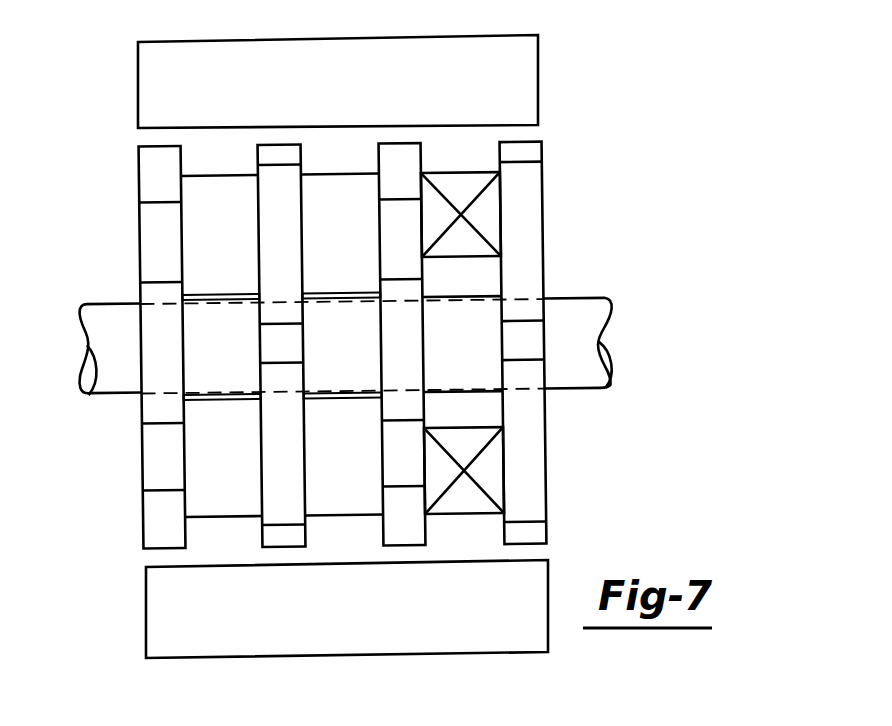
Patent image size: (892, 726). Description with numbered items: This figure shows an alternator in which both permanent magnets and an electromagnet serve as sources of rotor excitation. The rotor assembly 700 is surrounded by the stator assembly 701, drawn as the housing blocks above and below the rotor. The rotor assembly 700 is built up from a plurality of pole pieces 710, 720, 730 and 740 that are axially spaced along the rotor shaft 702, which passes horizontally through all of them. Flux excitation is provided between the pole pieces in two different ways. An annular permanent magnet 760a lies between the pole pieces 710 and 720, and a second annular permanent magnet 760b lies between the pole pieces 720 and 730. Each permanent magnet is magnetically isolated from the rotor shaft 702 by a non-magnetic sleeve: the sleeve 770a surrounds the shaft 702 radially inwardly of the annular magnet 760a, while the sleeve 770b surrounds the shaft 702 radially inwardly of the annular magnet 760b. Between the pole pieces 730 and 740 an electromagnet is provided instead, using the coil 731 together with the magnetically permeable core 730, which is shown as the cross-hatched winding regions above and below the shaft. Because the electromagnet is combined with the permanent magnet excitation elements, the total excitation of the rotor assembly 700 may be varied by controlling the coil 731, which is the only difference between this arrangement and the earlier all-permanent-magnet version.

The rotor assembly 700 is at (580, 166).
The stator assembly 701 is at (278, 40).
The rotor shaft 702 is at (570, 298).
The pole piece 710 is at (145, 512).
The pole piece 720 is at (265, 534).
The pole piece / magnetically permeable core 730 is at (385, 532).
The coil 731 is at (437, 172).
The pole piece 740 is at (507, 530).
The permanent magnet 760a is at (218, 158).
The permanent magnet 760b is at (340, 155).
The sleeve 770a is at (195, 292).
The sleeve 770b is at (315, 292).